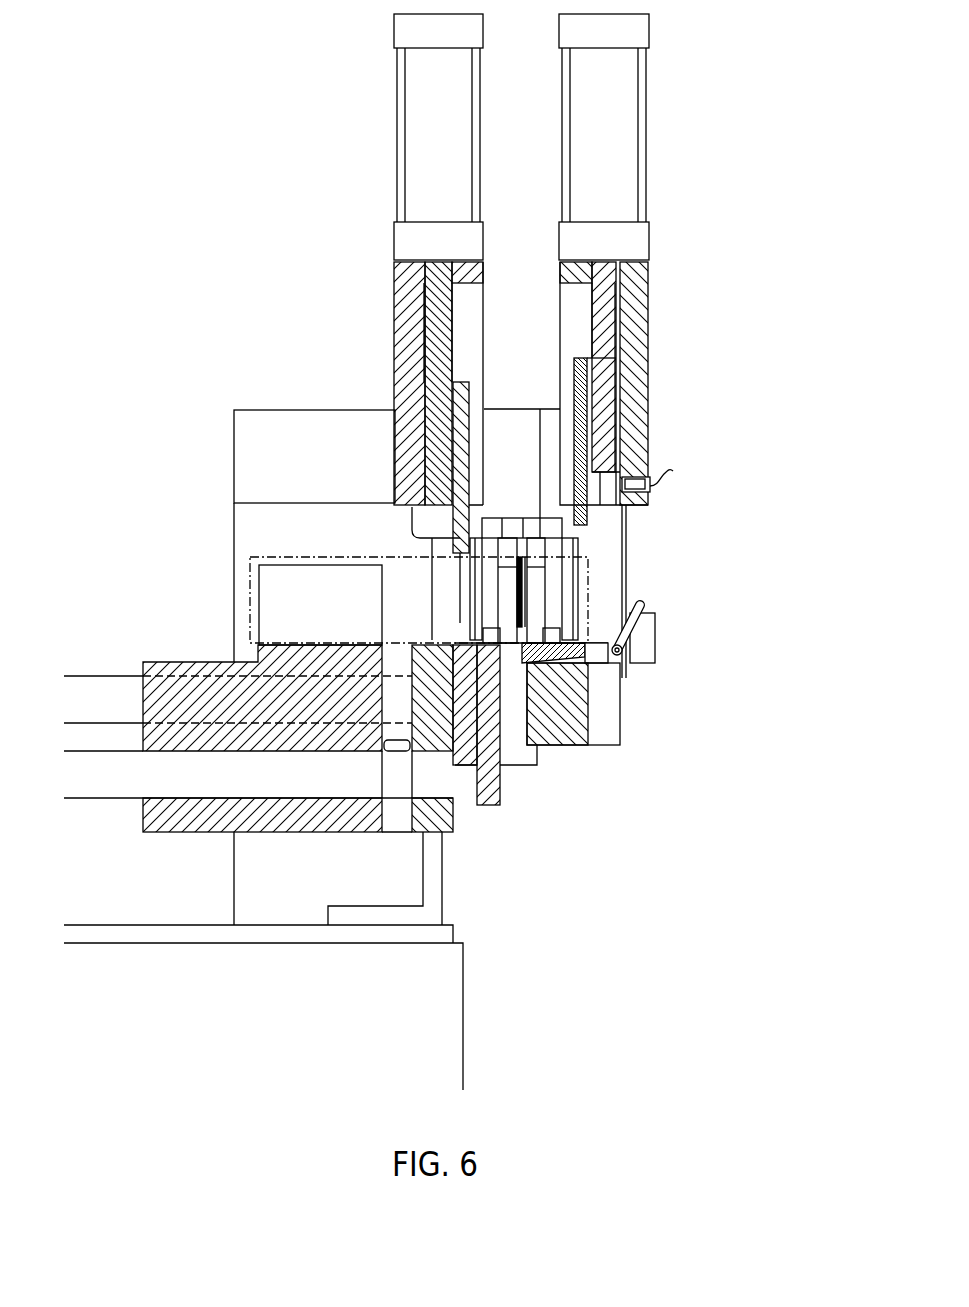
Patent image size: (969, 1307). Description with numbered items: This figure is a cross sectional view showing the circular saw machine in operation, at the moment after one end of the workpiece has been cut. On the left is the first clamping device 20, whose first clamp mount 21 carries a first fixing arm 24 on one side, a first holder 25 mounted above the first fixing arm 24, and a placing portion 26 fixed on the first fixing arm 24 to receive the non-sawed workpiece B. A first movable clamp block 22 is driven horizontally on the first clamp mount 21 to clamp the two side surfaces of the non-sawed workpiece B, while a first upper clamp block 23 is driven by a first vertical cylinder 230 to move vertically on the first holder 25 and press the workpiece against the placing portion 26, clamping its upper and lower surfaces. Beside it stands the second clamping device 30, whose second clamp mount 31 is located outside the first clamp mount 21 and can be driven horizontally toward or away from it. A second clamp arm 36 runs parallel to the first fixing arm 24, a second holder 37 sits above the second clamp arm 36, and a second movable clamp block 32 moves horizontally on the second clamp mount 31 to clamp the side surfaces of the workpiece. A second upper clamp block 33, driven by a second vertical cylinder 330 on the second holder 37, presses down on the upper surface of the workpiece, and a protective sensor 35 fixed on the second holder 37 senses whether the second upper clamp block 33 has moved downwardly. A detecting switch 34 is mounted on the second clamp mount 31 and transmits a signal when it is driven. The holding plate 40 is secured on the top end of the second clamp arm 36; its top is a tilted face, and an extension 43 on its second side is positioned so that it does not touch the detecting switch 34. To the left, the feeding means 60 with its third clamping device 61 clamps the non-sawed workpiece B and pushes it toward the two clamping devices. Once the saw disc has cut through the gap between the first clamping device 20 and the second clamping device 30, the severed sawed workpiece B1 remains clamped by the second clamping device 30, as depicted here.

The first clamping device 20 is at (290, 320).
The first clamp mount 21 is at (242, 430).
The first movable clamp block 22 is at (508, 590).
The first upper clamp block 23 is at (432, 440).
The first fixing arm 24 is at (470, 750).
The first holder 25 is at (400, 352).
The placing portion 26 is at (470, 643).
The second clamping device 30 is at (695, 350).
The second clamp mount 31 is at (625, 520).
The second movable clamp block 32 is at (538, 590).
The second upper clamp block 33 is at (580, 420).
The detecting switch 34 is at (655, 635).
The protective sensor 35 is at (637, 480).
The second clamp arm 36 is at (572, 742).
The second holder 37 is at (637, 308).
The holding plate 40 is at (603, 662).
The extension 43 is at (553, 661).
The feeding means 60 is at (136, 614).
The third clamping device 61 is at (190, 665).
The first vertical cylinder 230 is at (423, 148).
The second vertical cylinder 330 is at (624, 141).
The non-sawed workpiece B is at (287, 558).
The sawed workpiece B1 is at (590, 562).